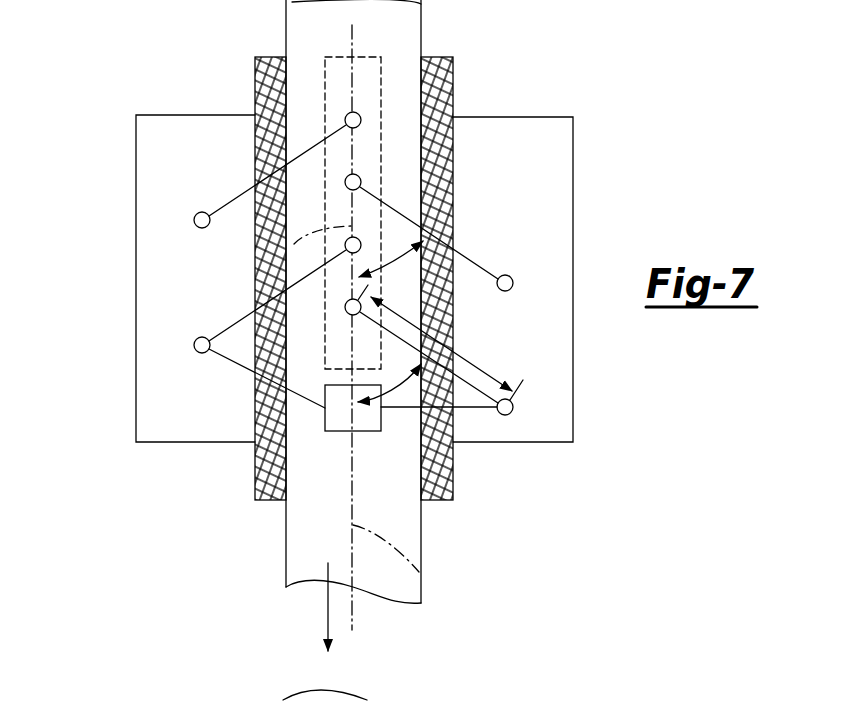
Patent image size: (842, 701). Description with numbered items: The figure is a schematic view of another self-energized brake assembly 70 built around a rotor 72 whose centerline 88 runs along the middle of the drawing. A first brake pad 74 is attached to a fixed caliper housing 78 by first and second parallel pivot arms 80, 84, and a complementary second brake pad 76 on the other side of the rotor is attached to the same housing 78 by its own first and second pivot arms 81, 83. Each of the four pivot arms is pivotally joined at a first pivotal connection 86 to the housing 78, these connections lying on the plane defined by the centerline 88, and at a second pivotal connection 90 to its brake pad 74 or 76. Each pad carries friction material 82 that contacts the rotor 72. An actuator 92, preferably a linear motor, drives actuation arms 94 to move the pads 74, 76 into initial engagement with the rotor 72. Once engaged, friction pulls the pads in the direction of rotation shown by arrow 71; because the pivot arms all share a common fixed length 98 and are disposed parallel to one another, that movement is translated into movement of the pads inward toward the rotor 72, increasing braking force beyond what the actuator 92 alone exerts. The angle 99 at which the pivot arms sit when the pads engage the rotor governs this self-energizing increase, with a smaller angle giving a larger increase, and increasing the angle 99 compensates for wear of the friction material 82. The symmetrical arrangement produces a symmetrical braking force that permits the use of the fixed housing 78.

The self-energized brake assembly 70 is at (640, 148).
The arrow 71 is at (328, 616).
The rotor 72 is at (293, 562).
The first brake pad 74 is at (530, 129).
The second brake pad 76 is at (163, 140).
The caliper housing 78 is at (273, 253).
The first pivot arm 80 is at (466, 240).
The first pivot arm 81 is at (233, 205).
The friction material 82 is at (255, 70).
The second pivot arm 83 is at (231, 326).
The second pivot arm 84 is at (481, 386).
The first pivotal connection 86 is at (346, 110).
The centerline 88 is at (421, 571).
The second pivotal connection 90 is at (192, 220).
The actuator 92 is at (334, 443).
The actuation arms 94 is at (302, 411).
The fixed length 98 is at (469, 357).
The angle 99 is at (403, 269).